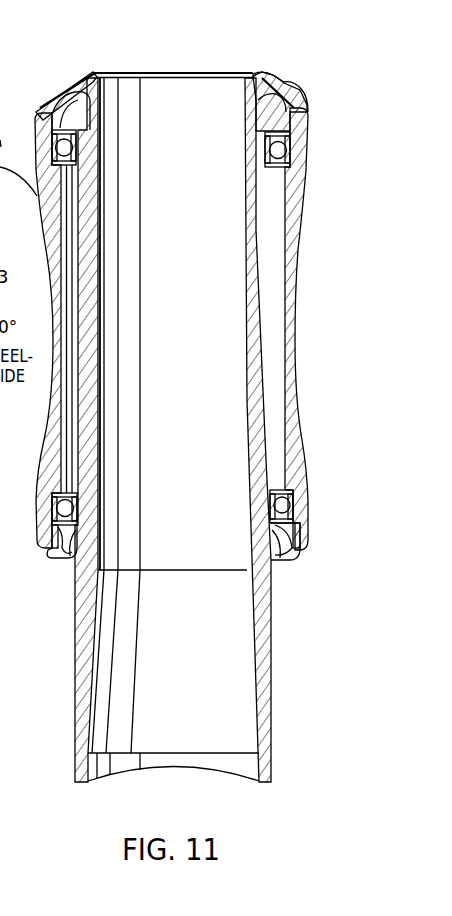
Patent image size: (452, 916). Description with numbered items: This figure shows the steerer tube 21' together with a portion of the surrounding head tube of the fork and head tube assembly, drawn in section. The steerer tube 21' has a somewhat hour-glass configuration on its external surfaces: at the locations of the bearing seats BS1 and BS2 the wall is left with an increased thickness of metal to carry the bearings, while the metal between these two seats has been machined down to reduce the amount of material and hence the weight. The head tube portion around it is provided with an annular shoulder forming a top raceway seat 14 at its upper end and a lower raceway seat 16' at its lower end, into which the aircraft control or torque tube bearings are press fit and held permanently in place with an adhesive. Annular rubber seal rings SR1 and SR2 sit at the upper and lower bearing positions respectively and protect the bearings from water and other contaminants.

The top raceway seat 14 is at (270, 122).
The lower raceway seat 16' is at (299, 554).
The steerer tube 21' is at (200, 427).
The bearing seat BS1 is at (279, 93).
The bearing seat BS2 is at (298, 430).
The seal ring SR1 is at (53, 101).
The seal ring SR2 is at (50, 560).